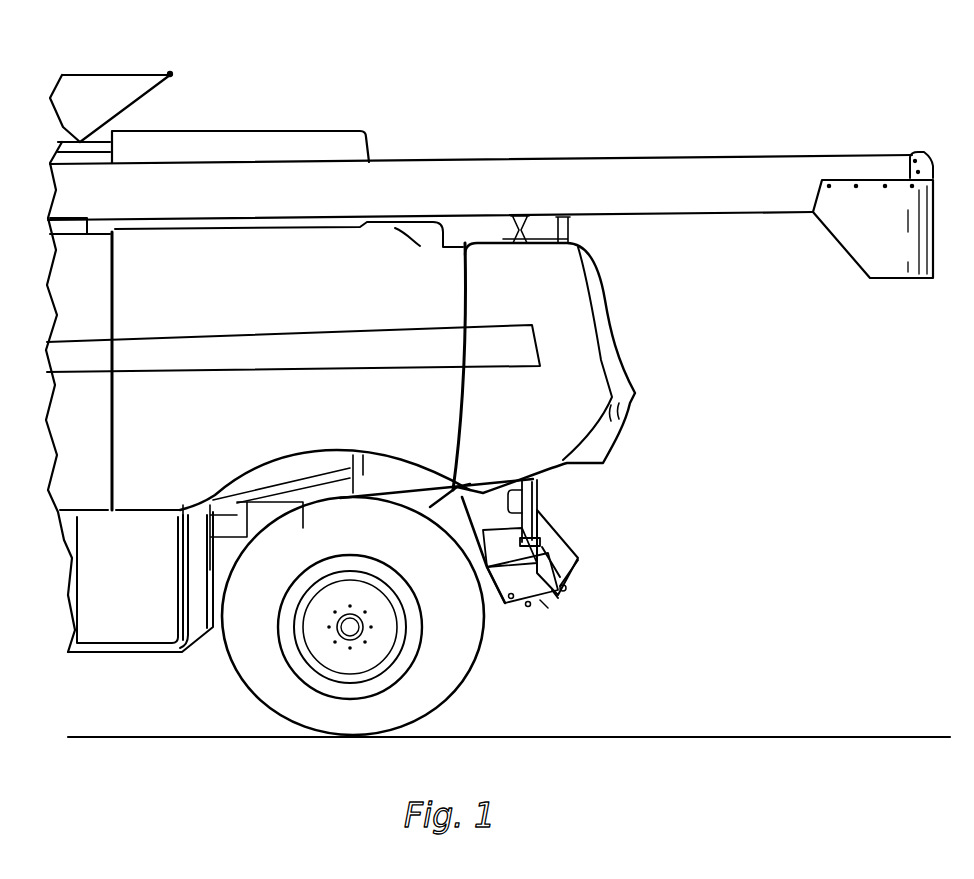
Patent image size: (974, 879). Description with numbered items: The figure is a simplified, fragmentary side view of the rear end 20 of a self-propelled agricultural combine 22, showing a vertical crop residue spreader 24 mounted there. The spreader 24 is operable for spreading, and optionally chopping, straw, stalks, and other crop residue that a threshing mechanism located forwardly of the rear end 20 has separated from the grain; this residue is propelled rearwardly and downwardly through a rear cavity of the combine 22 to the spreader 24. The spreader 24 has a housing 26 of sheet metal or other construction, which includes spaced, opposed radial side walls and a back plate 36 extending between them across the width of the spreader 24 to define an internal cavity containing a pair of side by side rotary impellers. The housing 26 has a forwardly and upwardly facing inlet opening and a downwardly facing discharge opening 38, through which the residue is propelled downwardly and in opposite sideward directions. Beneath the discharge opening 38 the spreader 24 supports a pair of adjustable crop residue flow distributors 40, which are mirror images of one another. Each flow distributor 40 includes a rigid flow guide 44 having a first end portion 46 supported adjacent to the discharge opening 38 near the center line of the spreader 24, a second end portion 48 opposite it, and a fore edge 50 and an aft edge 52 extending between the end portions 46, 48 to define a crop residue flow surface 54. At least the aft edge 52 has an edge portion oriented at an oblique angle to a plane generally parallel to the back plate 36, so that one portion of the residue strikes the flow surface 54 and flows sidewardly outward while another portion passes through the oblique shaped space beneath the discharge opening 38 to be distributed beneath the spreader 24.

The rear end 20 is at (613, 318).
The self-propelled agricultural combine 22 is at (678, 104).
The vertical crop residue spreader 24 is at (552, 545).
The housing 26 is at (478, 498).
The back plate 36 is at (565, 583).
The discharge opening 38 is at (514, 605).
The adjustable crop residue flow distributor 40 is at (542, 604).
The flow guide 44 is at (529, 607).
The first end portion 46 is at (492, 582).
The second end portion 48 is at (557, 597).
The fore edge 50 is at (497, 583).
The aft edge 52 is at (562, 542).
The crop residue flow surface 54 is at (567, 591).